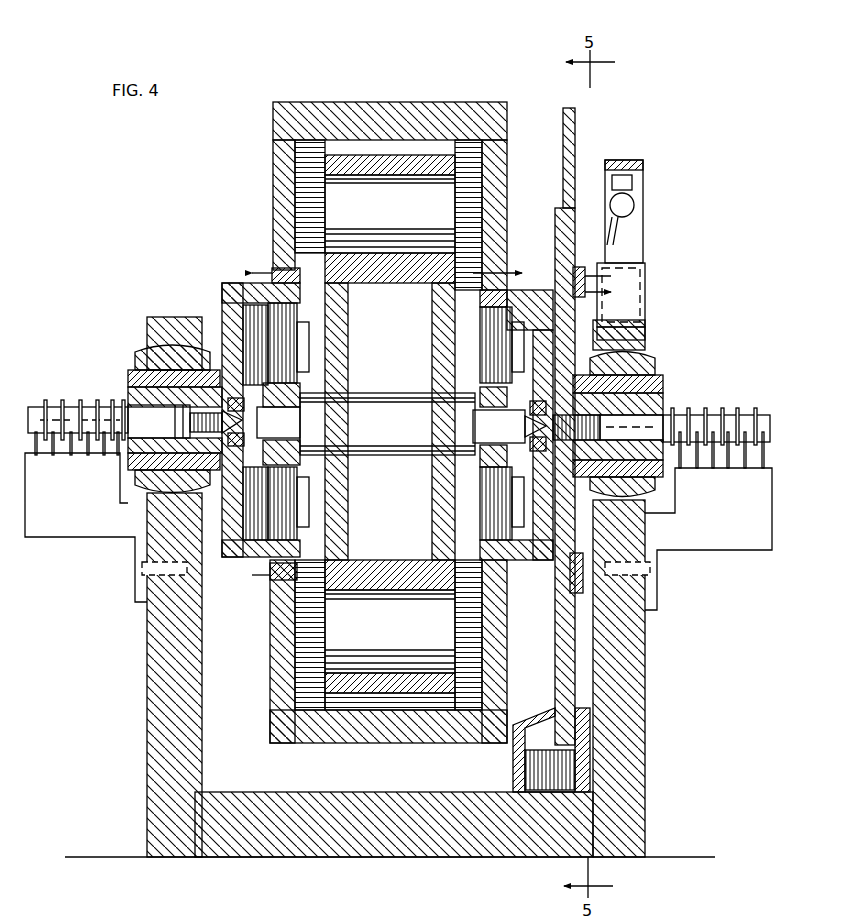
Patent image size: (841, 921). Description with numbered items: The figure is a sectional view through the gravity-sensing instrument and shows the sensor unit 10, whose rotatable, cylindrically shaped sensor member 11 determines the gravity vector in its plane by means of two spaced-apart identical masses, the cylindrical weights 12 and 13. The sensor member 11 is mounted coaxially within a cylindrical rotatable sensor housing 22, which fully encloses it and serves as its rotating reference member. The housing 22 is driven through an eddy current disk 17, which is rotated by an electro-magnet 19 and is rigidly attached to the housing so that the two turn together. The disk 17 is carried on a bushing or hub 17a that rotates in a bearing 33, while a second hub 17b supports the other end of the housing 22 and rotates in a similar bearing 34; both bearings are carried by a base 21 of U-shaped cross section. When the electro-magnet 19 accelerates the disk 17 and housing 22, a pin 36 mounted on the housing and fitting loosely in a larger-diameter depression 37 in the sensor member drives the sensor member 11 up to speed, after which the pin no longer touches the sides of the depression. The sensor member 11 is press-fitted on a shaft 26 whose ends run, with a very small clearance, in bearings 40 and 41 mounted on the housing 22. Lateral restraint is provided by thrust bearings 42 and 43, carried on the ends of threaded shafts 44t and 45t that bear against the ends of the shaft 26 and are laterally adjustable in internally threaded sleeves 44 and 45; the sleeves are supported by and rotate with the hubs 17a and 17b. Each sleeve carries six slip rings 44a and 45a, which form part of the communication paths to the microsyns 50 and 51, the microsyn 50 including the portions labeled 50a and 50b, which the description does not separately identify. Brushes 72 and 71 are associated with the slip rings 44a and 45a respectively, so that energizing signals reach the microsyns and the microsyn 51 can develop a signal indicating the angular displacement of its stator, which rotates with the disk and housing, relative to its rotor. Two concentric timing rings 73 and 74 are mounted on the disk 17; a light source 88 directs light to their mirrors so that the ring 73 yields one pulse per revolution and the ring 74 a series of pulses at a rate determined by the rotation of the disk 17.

The sensor unit 10 is at (330, 100).
The sensor member 11 is at (455, 162).
The cylindrical weight 12 is at (398, 219).
The cylindrical weight 13 is at (398, 633).
The eddy current disk 17 is at (577, 131).
The bushing 17a is at (665, 396).
The hub 17b is at (133, 395).
The electro-magnet 19 is at (511, 758).
The base 21 is at (645, 712).
The sensor housing 22 is at (270, 713).
The shaft 26 is at (397, 429).
The bearing 33 is at (663, 379).
The bearing 34 is at (130, 372).
The pin 36 is at (272, 276).
The depression 37 is at (322, 287).
The bearing 40 is at (259, 419).
The bearing 41 is at (525, 420).
The thrust bearing 42 is at (240, 438).
The thrust bearing 43 is at (535, 446).
The internally threaded sleeve 44 is at (26, 420).
The slip rings 44a is at (58, 404).
The threaded shaft 44t is at (200, 430).
The internally threaded sleeve 45 is at (770, 418).
The slip rings 45a is at (729, 408).
The threaded shaft 45t is at (631, 427).
The microsyn 50 is at (226, 296).
The inner coil 50a is at (243, 330).
The outer coil 50b is at (300, 393).
The microsyn 51 is at (500, 322).
The brushes 71 is at (763, 467).
The brushes 72 is at (40, 455).
The timing ring 73 is at (587, 300).
The timing ring 74 is at (583, 267).
The light source 88 is at (634, 206).